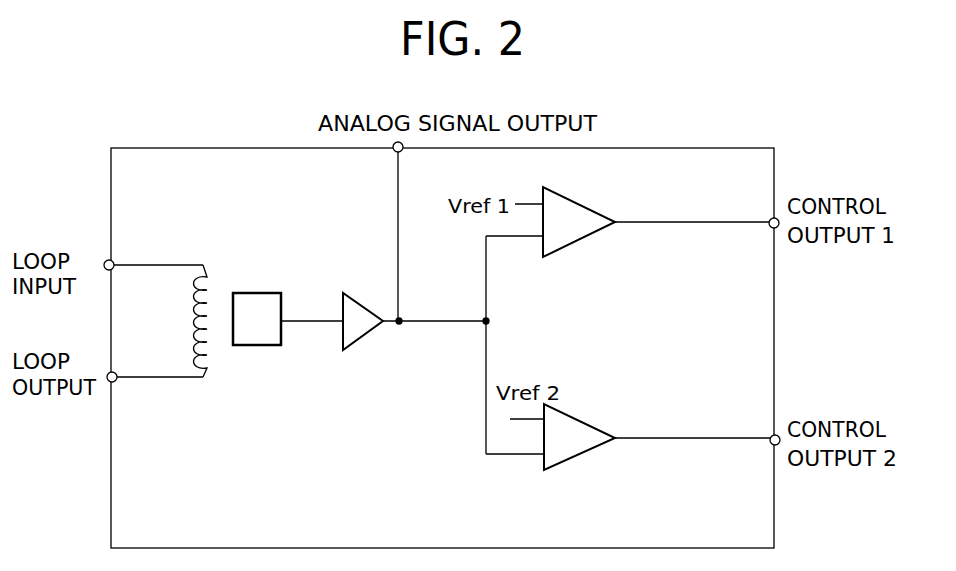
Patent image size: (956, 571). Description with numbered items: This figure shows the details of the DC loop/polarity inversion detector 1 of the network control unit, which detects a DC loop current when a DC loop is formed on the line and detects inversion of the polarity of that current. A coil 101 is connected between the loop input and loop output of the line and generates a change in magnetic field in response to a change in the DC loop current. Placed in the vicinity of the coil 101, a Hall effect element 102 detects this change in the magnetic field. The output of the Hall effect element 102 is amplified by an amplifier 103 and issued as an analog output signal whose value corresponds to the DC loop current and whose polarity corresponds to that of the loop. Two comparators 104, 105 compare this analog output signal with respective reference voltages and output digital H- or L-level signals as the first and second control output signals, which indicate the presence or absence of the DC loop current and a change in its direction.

The DC loop/polarity inversion detector 1 is at (636, 150).
The coil 101 is at (195, 257).
The Hall effect element 102 is at (262, 289).
The amplifier 103 is at (362, 338).
The comparator 104 is at (597, 207).
The comparator 105 is at (596, 428).